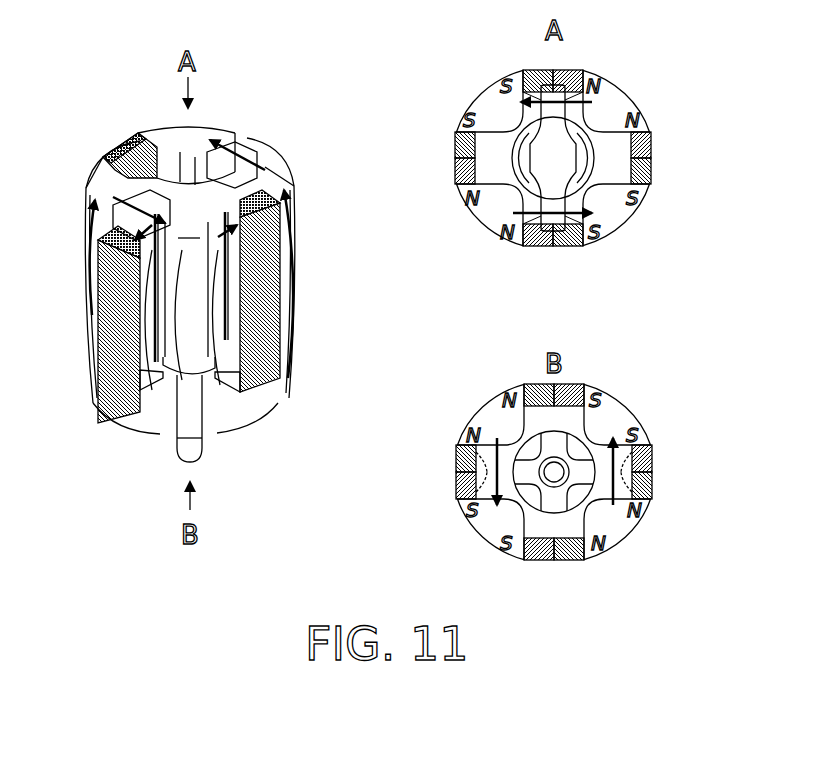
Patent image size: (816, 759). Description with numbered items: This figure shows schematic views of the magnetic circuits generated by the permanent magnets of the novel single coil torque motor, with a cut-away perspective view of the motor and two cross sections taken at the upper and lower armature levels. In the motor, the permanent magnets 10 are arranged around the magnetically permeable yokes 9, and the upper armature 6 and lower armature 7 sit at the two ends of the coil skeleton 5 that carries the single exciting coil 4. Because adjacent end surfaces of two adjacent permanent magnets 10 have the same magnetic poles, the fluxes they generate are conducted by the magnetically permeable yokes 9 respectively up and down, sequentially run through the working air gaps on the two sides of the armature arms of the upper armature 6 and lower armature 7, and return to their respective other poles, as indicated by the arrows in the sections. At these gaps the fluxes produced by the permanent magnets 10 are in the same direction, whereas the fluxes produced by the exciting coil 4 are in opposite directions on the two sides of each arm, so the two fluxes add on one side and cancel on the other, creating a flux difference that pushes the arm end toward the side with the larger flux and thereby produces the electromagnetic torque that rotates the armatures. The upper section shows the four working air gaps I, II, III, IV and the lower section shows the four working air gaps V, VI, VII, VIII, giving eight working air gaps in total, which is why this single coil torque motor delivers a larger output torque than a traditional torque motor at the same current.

The exciting coil 4 is at (233, 297).
The coil skeleton 5 is at (227, 267).
The upper armature 6 is at (235, 150).
The lower armature 7 is at (247, 403).
The magnetically permeable yoke 9 is at (290, 213).
The permanent magnet 10 is at (122, 150).
The working air gap I is at (522, 71).
The working air gap II is at (582, 71).
The working air gap III is at (522, 249).
The working air gap IV is at (583, 249).
The working air gap V is at (457, 445).
The working air gap VI is at (457, 502).
The working air gap VII is at (652, 445).
The working air gap VIII is at (652, 502).